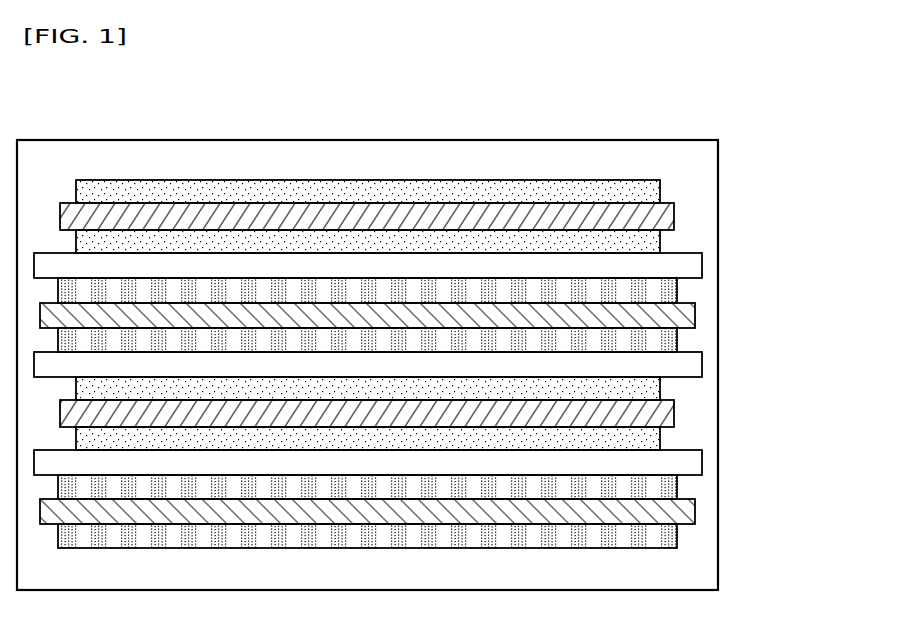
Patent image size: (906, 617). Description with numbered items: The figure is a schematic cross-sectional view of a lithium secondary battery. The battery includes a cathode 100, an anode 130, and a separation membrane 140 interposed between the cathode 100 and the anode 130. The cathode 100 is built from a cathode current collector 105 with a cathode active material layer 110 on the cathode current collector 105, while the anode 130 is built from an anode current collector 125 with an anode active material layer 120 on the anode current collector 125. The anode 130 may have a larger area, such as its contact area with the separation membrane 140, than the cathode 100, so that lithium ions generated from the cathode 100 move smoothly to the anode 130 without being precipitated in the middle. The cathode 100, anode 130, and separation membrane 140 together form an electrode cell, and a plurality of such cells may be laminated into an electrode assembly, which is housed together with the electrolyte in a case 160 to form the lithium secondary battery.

The cathode 100 is at (463, 313).
The cathode current collector 105 is at (675, 217).
The cathode active material layer 110 is at (653, 192).
The anode active material layer 120 is at (678, 287).
The anode current collector 125 is at (695, 312).
The anode 130 is at (453, 412).
The separation membrane 140 is at (573, 262).
The case 160 is at (718, 513).